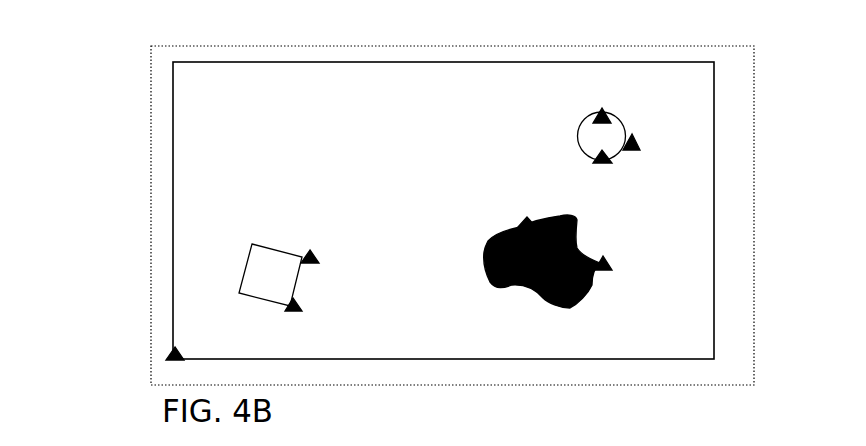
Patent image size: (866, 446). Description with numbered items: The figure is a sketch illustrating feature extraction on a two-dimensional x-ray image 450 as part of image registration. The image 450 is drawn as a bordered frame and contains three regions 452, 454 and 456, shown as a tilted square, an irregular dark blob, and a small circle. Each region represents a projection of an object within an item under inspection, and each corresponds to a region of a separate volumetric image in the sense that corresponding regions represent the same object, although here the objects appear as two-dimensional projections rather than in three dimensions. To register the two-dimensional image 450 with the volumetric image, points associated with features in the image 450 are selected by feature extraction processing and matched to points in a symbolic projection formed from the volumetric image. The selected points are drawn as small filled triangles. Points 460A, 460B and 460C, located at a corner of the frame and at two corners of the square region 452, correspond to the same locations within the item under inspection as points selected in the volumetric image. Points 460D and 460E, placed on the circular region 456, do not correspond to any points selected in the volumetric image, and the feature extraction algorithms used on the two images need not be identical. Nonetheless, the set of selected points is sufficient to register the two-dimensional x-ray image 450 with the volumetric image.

The two-dimensional x-ray image 450 is at (762, 202).
The region 452 is at (272, 265).
The region 454 is at (508, 258).
The region 456 is at (590, 137).
The point 460A is at (175, 347).
The point 460B is at (291, 311).
The point 460C is at (311, 250).
The point 460D is at (604, 164).
The point 460E is at (601, 110).